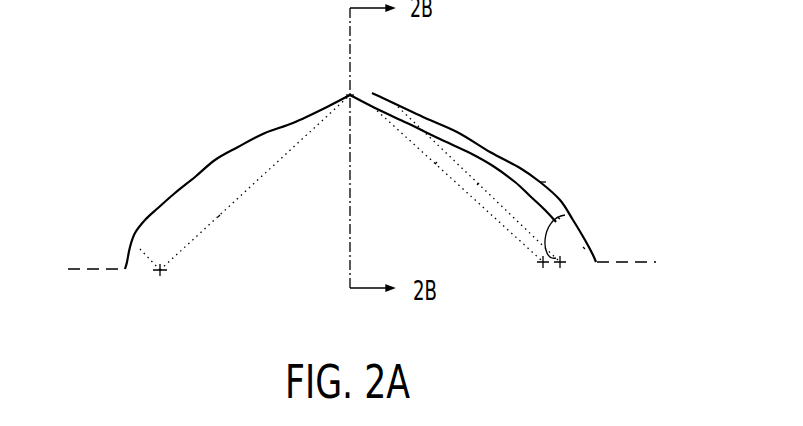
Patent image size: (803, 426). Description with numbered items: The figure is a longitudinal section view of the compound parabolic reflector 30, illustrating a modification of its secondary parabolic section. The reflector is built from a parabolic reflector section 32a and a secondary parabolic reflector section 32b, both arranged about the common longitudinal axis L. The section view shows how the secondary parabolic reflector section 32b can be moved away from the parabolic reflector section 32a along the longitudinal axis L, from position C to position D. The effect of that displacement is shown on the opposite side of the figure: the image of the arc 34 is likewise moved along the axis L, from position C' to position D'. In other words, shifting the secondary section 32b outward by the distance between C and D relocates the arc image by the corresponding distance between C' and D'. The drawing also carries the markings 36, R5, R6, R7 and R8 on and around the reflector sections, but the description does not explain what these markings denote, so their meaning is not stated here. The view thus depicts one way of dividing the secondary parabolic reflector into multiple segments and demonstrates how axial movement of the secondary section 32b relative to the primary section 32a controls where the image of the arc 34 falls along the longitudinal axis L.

The compound parabolic reflector 30 is at (143, 97).
The parabolic reflector section 32a is at (277, 128).
The secondary parabolic reflector section 32b is at (452, 130).
The arc 34 is at (160, 273).
The tip region 36 is at (538, 265).
The position C is at (376, 69).
The position D is at (573, 145).
The position C' is at (534, 295).
The position D' is at (580, 295).
The radius R5 is at (557, 217).
The radius R6 is at (218, 217).
The radius R7 is at (477, 185).
The radius R8 is at (583, 247).
The longitudinal axis L is at (364, 269).